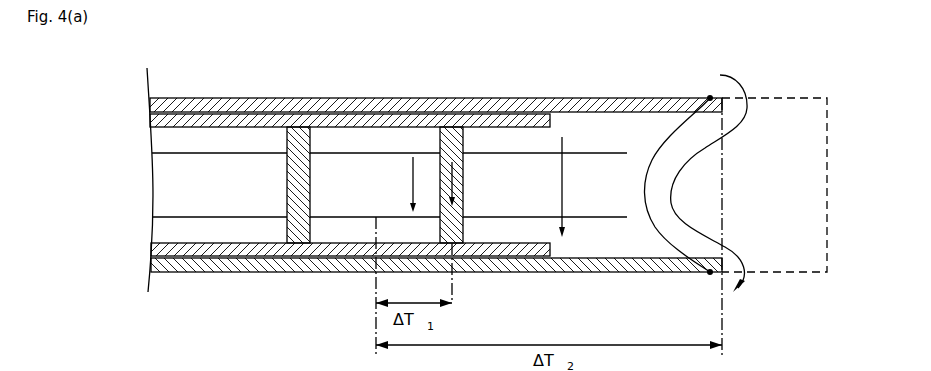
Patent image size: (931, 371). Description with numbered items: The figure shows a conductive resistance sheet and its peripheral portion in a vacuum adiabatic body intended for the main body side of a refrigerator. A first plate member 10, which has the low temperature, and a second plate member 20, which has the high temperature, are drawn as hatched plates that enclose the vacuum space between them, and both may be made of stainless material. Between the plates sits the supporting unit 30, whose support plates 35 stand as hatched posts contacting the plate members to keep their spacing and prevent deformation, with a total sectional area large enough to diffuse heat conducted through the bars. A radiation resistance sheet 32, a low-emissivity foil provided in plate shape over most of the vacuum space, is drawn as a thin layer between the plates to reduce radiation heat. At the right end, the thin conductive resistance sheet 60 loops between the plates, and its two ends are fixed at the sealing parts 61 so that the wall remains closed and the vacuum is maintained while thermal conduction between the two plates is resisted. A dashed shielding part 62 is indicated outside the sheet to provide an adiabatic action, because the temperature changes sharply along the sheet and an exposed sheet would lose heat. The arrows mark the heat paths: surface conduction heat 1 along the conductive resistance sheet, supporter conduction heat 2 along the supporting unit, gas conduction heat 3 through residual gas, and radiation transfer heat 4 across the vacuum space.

The first plate member 10 is at (200, 273).
The second plate member 20 is at (554, 97).
The supporting unit 30 is at (440, 136).
The radiation resistance sheet 32 is at (612, 152).
The support plate 35 is at (442, 119).
The conductive resistance sheet 60 is at (647, 197).
The sealing part 61 is at (709, 96).
The shielding part 62 is at (827, 125).
The surface conduction heat 1 is at (763, 83).
The supporter conduction heat 2 is at (453, 178).
The gas conduction heat 3 is at (574, 187).
The radiation transfer heat 4 is at (411, 173).